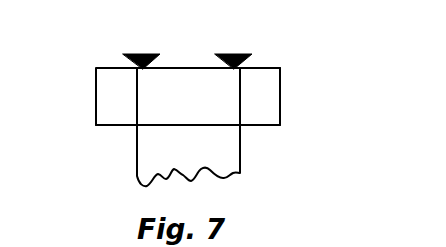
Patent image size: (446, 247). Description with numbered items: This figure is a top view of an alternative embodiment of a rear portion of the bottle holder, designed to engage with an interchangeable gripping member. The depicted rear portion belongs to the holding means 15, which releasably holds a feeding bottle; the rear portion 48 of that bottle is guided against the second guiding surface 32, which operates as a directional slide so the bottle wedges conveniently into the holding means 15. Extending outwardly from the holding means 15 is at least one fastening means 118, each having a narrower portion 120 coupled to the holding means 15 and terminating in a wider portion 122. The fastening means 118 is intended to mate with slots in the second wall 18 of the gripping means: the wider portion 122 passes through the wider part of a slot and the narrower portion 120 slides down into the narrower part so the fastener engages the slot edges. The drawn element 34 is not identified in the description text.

The holding means 15 is at (299, 98).
The second wall 18 is at (267, 113).
The second guiding surface 32 is at (153, 112).
The strip 34 is at (218, 157).
The narrower portion 120 is at (231, 71).
The wider portion 122 is at (226, 54).
The fastening means 118 is at (250, 57).
The rear portion 48 is at (345, 236).